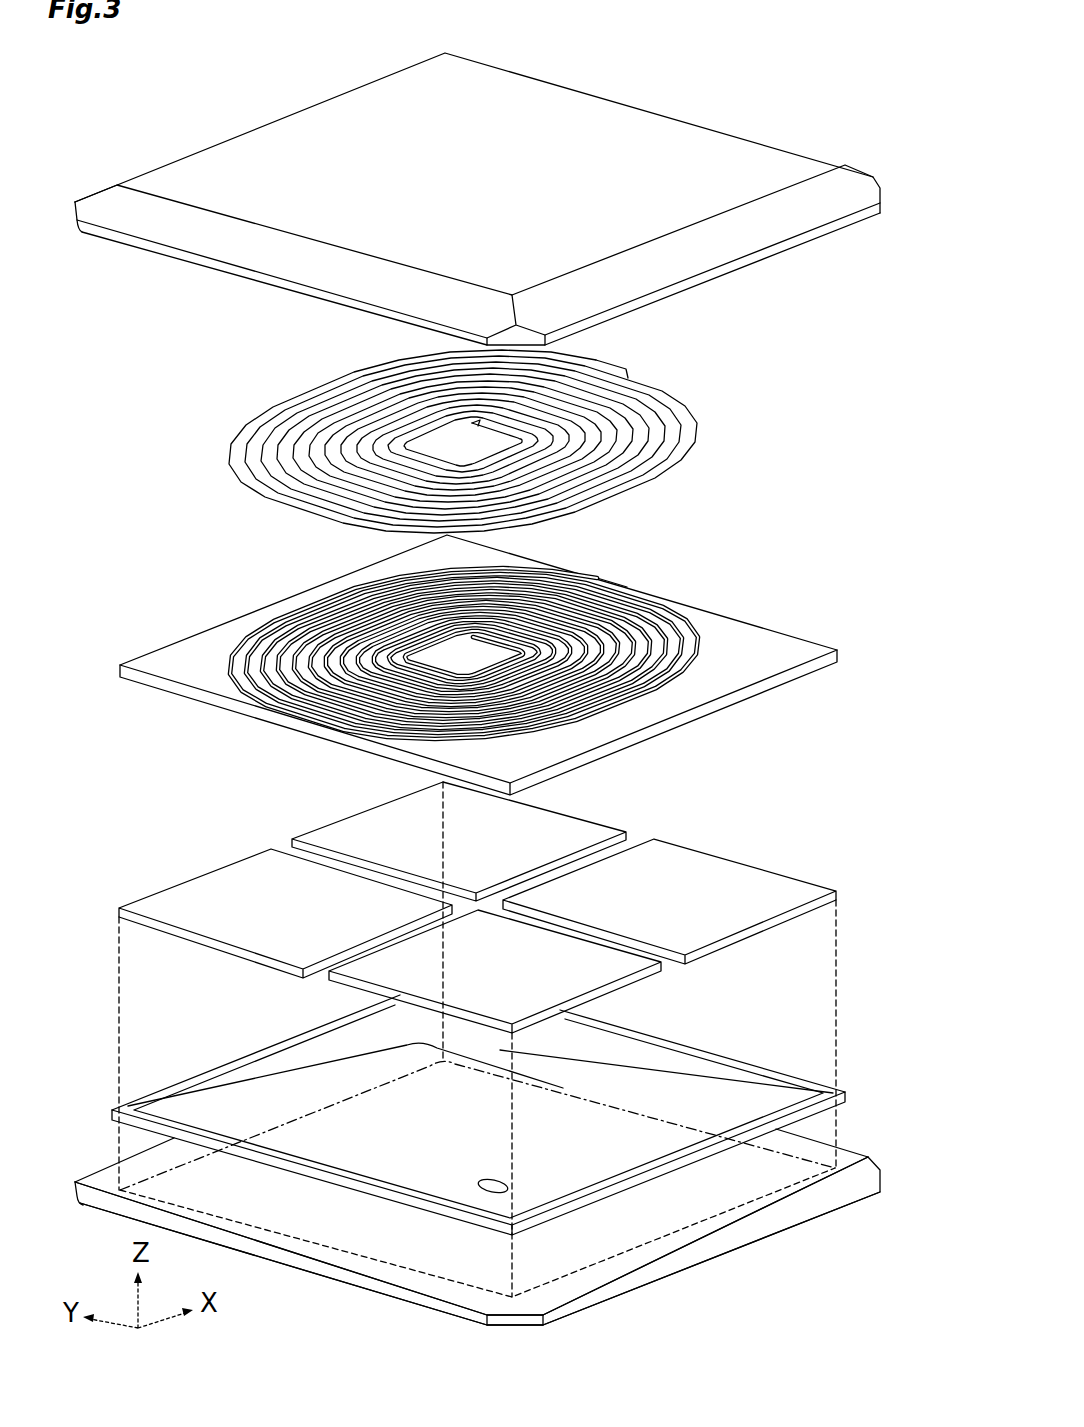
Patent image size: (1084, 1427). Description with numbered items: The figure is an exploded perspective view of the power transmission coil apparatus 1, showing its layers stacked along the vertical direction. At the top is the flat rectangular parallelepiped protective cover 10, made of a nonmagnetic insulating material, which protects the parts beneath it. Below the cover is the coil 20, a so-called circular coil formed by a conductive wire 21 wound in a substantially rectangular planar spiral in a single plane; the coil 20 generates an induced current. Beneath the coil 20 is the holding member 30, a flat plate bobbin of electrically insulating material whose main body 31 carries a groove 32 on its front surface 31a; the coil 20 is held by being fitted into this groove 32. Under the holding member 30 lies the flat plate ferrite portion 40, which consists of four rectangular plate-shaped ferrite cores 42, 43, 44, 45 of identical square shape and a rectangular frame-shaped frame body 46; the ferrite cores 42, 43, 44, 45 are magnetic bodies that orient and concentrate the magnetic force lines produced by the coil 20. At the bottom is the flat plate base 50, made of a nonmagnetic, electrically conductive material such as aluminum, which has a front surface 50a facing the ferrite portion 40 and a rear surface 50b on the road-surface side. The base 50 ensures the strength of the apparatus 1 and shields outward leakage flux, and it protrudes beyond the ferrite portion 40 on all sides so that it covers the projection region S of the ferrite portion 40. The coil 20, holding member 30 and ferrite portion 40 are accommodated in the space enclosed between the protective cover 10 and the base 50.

The power transmission coil apparatus 1 is at (873, 114).
The protective cover 10 is at (753, 148).
The coil 20 is at (735, 388).
The conductive wire 21 is at (657, 392).
The holding member 30 is at (732, 561).
The main body 31 is at (838, 648).
The front surface 31a is at (765, 632).
The groove 32 is at (657, 604).
The ferrite portion 40 is at (878, 827).
The ferrite core 42 is at (183, 893).
The ferrite core 43 is at (363, 827).
The ferrite core 44 is at (788, 886).
The ferrite core 45 is at (609, 969).
The frame body 46 is at (741, 1066).
The base 50 is at (881, 1183).
The front surface 50a is at (868, 1162).
The rear surface 50b is at (821, 1217).
The projection region S is at (710, 1218).